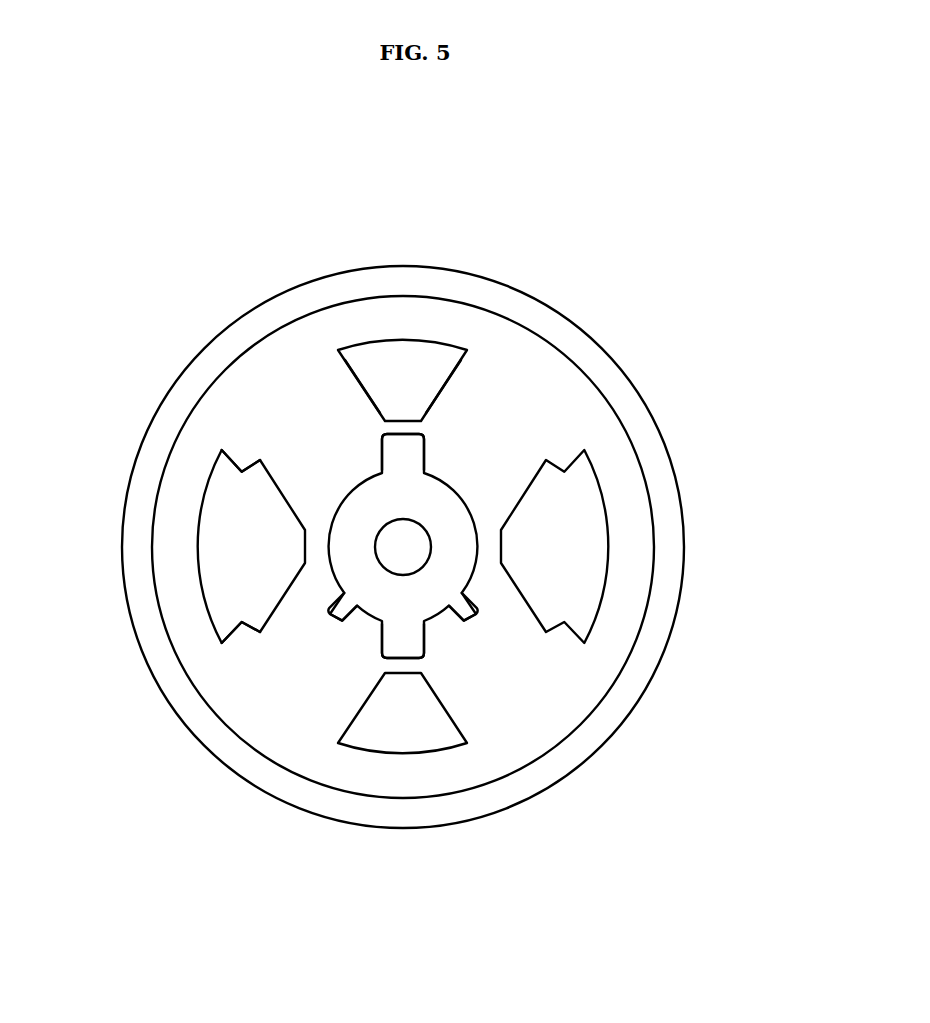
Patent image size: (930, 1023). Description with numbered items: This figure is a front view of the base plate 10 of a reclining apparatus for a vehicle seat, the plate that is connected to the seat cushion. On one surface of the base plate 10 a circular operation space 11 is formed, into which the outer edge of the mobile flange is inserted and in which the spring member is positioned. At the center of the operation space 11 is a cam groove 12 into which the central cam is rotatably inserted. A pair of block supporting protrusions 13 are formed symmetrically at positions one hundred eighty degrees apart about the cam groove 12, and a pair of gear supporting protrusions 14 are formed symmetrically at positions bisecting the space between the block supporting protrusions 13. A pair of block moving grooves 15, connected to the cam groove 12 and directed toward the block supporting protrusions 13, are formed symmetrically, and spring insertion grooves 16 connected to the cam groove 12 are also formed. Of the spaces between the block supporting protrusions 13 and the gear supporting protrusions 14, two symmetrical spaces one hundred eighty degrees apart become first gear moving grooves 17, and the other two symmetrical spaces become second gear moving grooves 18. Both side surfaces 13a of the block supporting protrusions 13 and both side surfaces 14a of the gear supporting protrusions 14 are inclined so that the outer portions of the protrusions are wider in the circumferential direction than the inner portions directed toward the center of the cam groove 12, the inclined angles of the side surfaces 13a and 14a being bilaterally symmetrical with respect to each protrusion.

The base plate 10 is at (467, 282).
The operation space 11 is at (378, 298).
The cam groove 12 is at (447, 517).
The block supporting protrusions 13 is at (403, 350).
The side surfaces of block supporting protrusions 13a is at (362, 393).
The gear supporting protrusions 14 is at (208, 551).
The side surfaces of gear supporting protrusions 14a is at (283, 492).
The block moving grooves 15 is at (393, 448).
The spring insertion grooves 16 is at (340, 615).
The first gear moving grooves 17 is at (310, 413).
The second gear moving grooves 18 is at (495, 412).